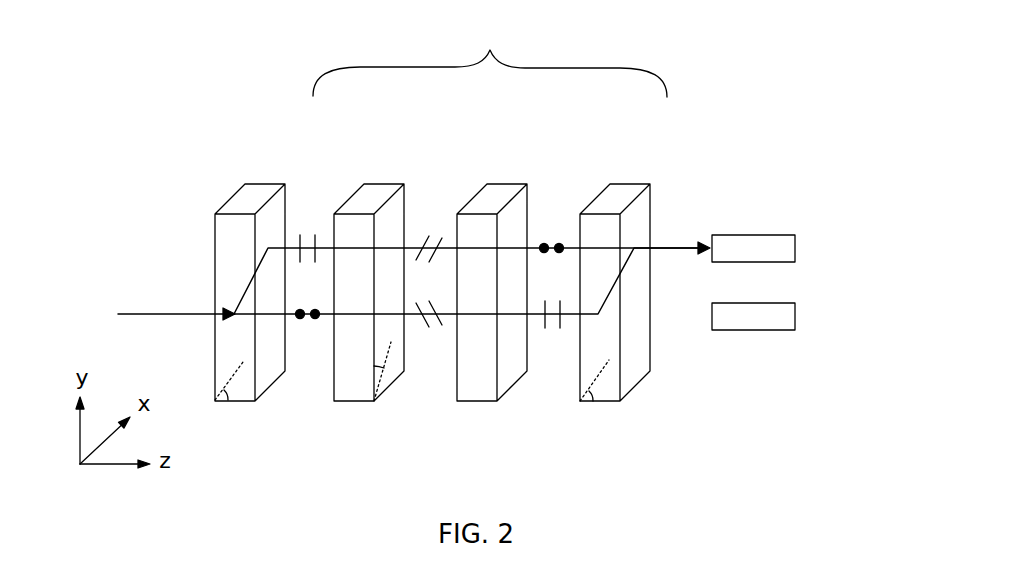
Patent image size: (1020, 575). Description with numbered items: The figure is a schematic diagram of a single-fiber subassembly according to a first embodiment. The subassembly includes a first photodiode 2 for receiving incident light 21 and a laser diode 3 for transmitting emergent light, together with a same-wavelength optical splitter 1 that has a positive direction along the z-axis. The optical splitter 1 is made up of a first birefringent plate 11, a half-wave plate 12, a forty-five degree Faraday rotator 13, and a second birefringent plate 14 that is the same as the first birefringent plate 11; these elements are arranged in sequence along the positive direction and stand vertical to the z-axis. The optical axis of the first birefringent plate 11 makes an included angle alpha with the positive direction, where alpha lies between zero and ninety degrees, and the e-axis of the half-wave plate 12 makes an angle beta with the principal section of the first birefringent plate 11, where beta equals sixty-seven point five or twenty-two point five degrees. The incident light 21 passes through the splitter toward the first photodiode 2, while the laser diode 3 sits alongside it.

The same-wavelength optical splitter 1 is at (490, 56).
The first birefringent plate 11 is at (252, 202).
The half-wave plate 12 is at (370, 203).
The 45° Faraday rotator 13 is at (492, 203).
The second birefringent plate 14 is at (612, 204).
The incident light 21 is at (148, 313).
The first photodiode 2 is at (778, 246).
The laser diode 3 is at (777, 317).